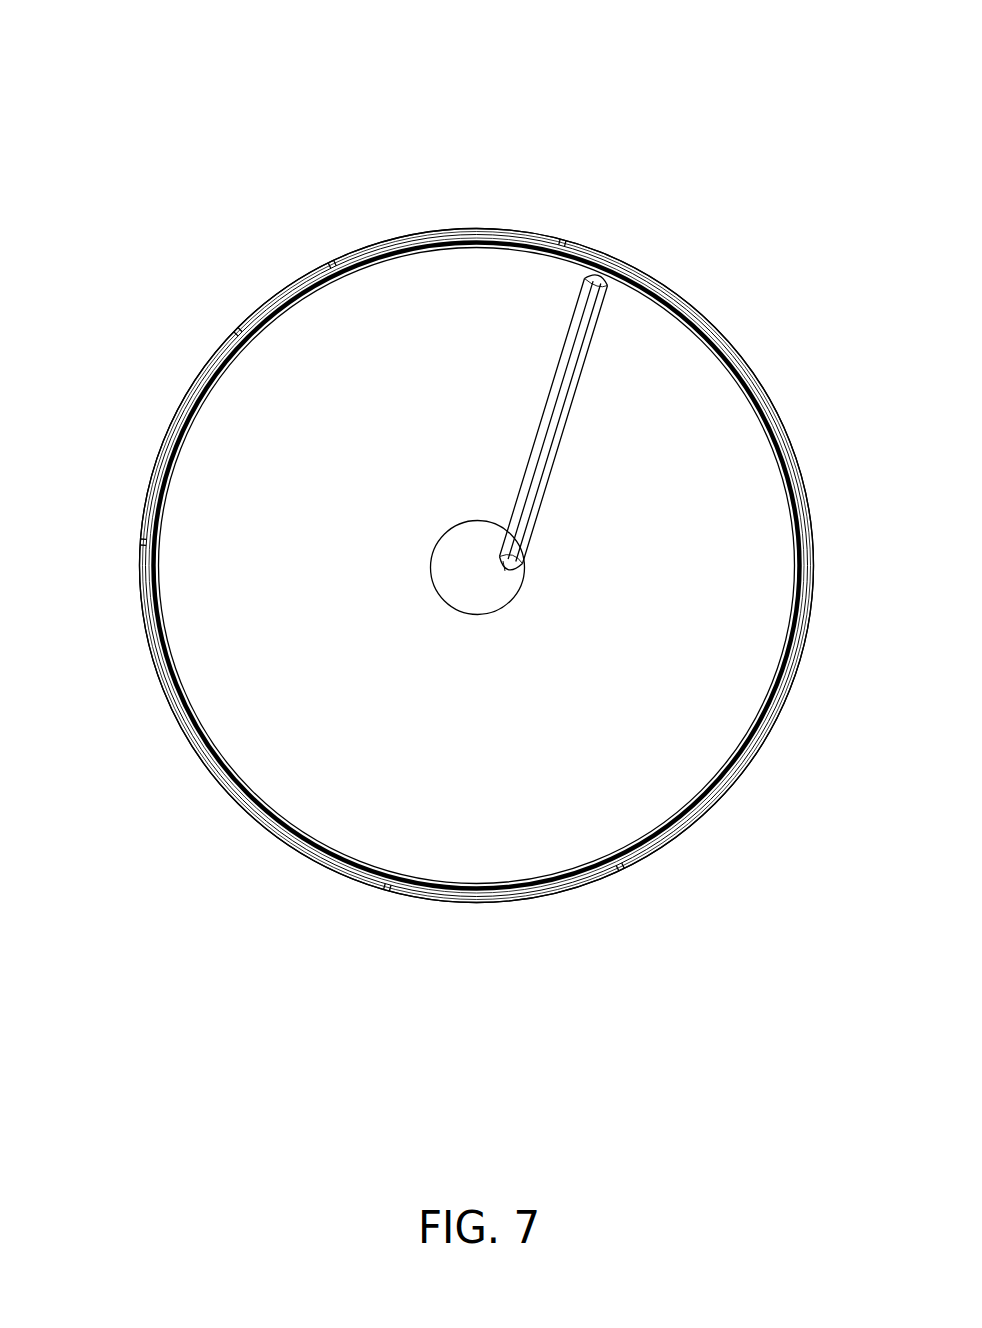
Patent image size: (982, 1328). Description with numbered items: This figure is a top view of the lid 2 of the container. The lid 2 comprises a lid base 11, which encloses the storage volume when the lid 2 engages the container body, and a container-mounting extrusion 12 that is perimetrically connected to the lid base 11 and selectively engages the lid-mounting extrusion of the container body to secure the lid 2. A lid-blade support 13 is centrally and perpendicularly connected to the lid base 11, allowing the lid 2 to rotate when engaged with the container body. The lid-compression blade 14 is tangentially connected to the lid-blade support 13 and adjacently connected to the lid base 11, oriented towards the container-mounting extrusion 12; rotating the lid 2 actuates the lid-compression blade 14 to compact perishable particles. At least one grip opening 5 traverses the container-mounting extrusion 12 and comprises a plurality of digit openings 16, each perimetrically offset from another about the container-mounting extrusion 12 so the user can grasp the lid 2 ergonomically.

The lid 2 is at (360, 52).
The at least one grip opening 5 is at (92, 457).
The lid base 11 is at (455, 272).
The container-mounting extrusion 12 is at (170, 695).
The lid-blade support 13 is at (467, 605).
The lid-compression blade 14 is at (558, 450).
The digit openings 16 is at (532, 242).